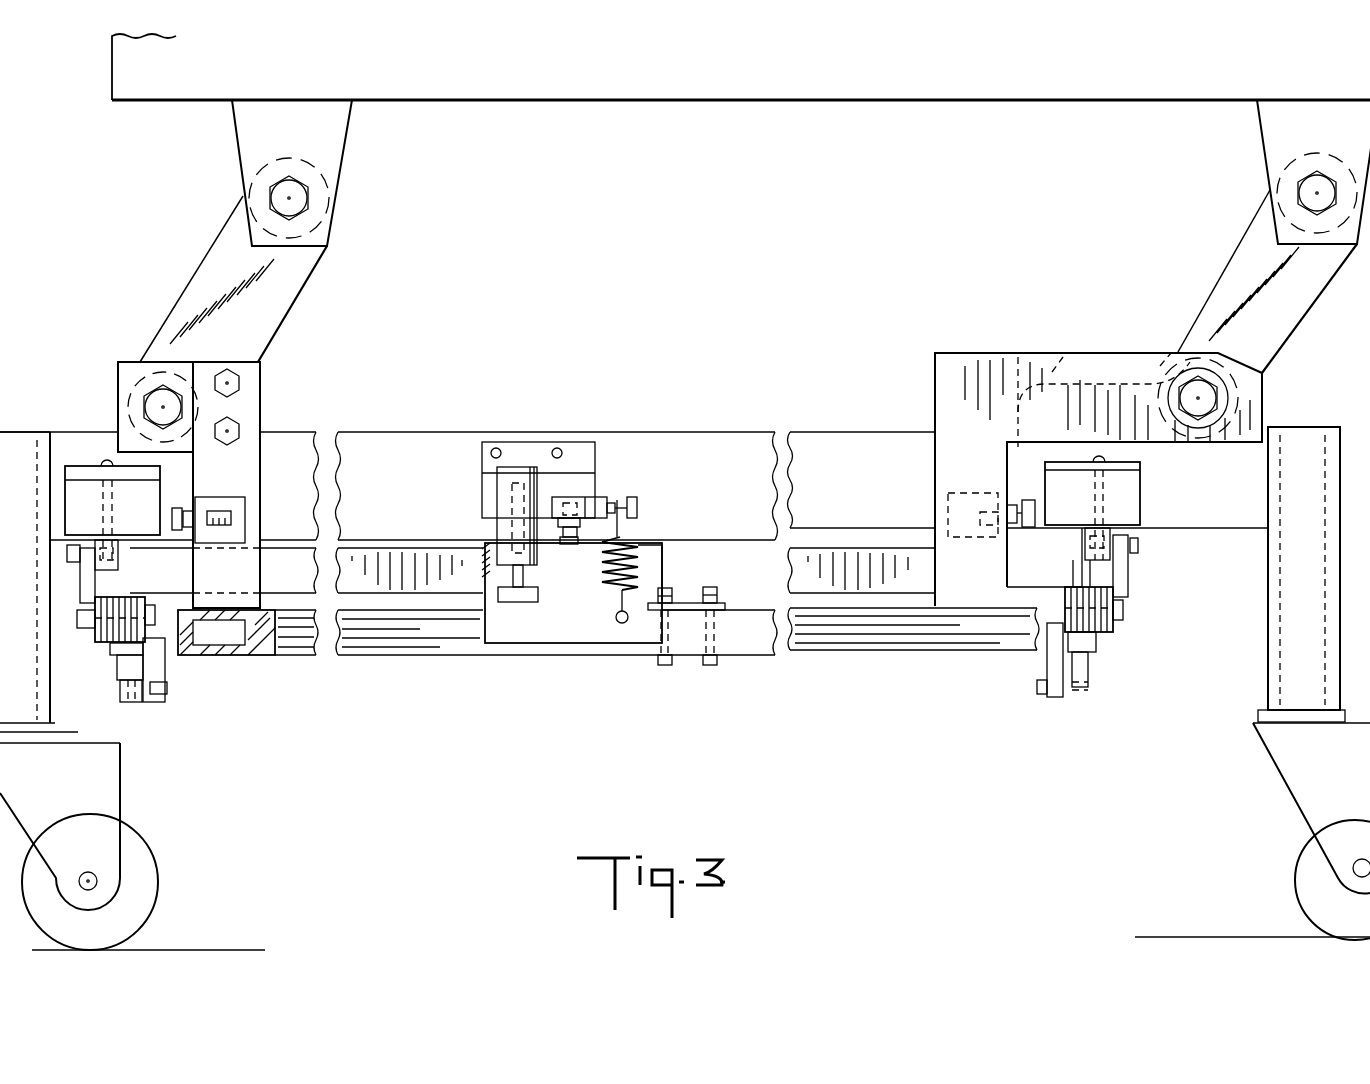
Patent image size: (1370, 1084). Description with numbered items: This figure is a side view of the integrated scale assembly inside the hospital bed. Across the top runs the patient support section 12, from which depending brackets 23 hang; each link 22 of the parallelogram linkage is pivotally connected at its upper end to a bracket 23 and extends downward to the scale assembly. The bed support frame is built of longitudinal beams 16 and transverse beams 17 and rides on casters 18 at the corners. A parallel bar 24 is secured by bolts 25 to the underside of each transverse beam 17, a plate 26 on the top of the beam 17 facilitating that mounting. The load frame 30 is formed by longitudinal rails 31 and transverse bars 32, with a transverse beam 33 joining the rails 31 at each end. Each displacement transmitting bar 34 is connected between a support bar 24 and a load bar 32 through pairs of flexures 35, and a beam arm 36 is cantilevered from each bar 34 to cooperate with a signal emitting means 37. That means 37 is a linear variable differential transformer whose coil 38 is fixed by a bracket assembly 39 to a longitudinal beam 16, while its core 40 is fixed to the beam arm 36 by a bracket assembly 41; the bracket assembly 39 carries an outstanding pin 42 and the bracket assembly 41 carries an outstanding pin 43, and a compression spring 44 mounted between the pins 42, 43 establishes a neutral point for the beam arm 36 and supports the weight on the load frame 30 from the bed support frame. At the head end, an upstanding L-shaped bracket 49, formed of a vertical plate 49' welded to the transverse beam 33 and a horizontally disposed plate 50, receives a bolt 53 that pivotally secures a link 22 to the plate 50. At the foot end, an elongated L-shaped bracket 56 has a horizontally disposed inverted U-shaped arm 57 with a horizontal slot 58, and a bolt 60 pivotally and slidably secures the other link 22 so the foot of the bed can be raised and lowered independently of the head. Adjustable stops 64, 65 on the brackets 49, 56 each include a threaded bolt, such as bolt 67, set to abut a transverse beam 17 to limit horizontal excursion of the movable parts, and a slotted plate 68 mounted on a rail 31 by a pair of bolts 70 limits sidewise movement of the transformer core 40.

The patient support section 12 is at (572, 100).
The longitudinal beam 16 is at (750, 435).
The transverse beam 17 is at (72, 503).
The caster 18 is at (150, 867).
The link 22 is at (278, 285).
The depending bracket 23 is at (338, 145).
The parallel bar 24 is at (100, 556).
The bolt 25 is at (107, 462).
The plate 26 is at (73, 470).
The load frame 30 is at (128, 673).
The rail 31 is at (422, 647).
The transverse bar 32 is at (1090, 666).
The transverse beam 33 is at (240, 655).
The displacement transmitting bar 34 is at (100, 633).
The flexure 35 is at (80, 583).
The beam arm 36 is at (396, 565).
The signal emitting means 37 is at (585, 544).
The coil 38 is at (500, 487).
The bracket assembly 39 is at (590, 478).
The core 40 is at (525, 575).
The bracket assembly 41 is at (483, 630).
The outstanding pin 42 is at (622, 500).
The outstanding pin 43 is at (620, 625).
The compression spring 44 is at (630, 537).
The L-shaped bracket 49 is at (275, 470).
The vertical plate 49' is at (297, 435).
The horizontally disposed plate 50 is at (118, 366).
The bolt 53 is at (155, 402).
The elongated L-shaped bracket 56 is at (932, 360).
The inverted U-shaped arm 57 is at (1135, 360).
The slot 58 is at (1090, 407).
The bolt 60 is at (1215, 391).
The adjustable stop 64 is at (225, 503).
The adjustable stop 65 is at (998, 500).
The threaded bolt 67 is at (1032, 505).
The plate 68 is at (687, 605).
The bolt 70 is at (708, 665).